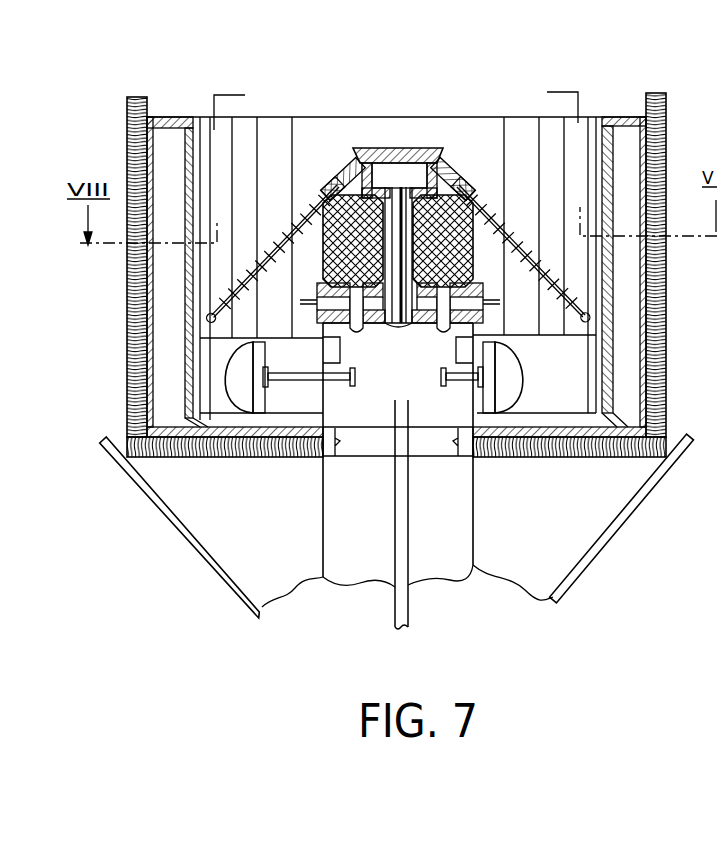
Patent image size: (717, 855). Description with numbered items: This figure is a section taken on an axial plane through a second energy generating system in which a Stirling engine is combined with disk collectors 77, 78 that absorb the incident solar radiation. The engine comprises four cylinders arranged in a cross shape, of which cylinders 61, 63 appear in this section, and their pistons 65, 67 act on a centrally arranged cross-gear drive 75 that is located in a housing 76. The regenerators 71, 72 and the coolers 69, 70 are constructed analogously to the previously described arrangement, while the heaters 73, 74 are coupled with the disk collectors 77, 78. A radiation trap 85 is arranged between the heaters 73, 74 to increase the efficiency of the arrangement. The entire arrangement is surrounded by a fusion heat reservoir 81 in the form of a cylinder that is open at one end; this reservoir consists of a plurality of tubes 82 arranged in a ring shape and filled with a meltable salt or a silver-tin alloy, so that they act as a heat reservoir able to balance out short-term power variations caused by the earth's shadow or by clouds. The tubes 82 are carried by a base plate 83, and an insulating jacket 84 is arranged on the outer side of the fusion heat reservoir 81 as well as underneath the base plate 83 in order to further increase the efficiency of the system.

The cylinder 61 is at (563, 390).
The cylinder 63 is at (278, 400).
The piston 65 is at (512, 393).
The piston 67 is at (224, 400).
The cooler 69 is at (477, 300).
The cooler 70 is at (322, 297).
The regenerator 71 is at (478, 195).
The regenerator 72 is at (324, 190).
The heater 73 is at (456, 175).
The heater 74 is at (354, 148).
The cross-gear drive 75 is at (361, 412).
The housing 76 is at (358, 557).
The disk collector 77 is at (275, 247).
The disk collector 78 is at (538, 225).
The fusion heat reservoir 81 is at (610, 108).
The tubes 82 is at (163, 140).
The base plate 83 is at (497, 456).
The insulating jacket 84 is at (138, 128).
The radiation trap 85 is at (397, 148).